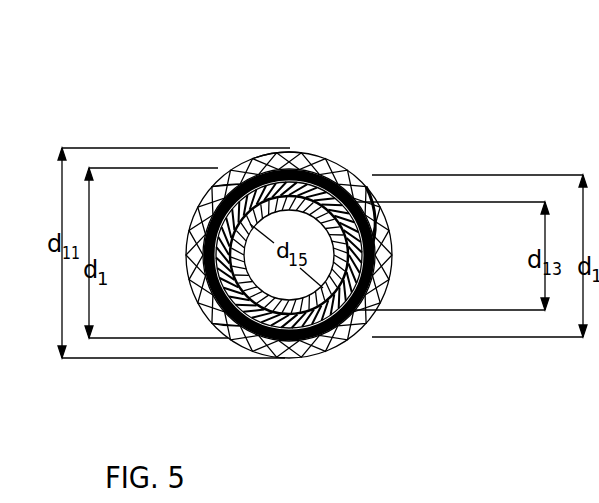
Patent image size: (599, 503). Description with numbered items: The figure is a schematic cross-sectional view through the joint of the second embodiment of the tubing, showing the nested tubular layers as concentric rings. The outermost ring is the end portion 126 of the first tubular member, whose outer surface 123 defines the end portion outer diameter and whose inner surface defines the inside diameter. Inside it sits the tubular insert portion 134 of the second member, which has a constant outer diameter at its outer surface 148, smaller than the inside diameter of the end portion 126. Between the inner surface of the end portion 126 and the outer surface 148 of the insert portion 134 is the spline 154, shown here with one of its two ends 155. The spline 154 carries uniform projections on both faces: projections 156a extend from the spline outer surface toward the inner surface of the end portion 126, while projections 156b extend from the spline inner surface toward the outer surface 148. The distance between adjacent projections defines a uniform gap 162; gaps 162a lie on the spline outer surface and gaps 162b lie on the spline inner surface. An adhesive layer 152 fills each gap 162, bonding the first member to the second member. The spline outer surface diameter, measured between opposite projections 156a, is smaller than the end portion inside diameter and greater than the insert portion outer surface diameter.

The outer surface 123 is at (322, 159).
The end portion 126 is at (387, 271).
The tubular insert portion 134 is at (190, 266).
The outer surface 148 is at (212, 303).
The adhesive layer 152 is at (199, 221).
The spline 154 is at (232, 344).
The spline end 155 is at (581, 483).
The projections 156a is at (280, 158).
The projections 156b is at (217, 179).
The gap 162 is at (346, 171).
The gaps 162a is at (378, 176).
The gaps 162b is at (188, 251).